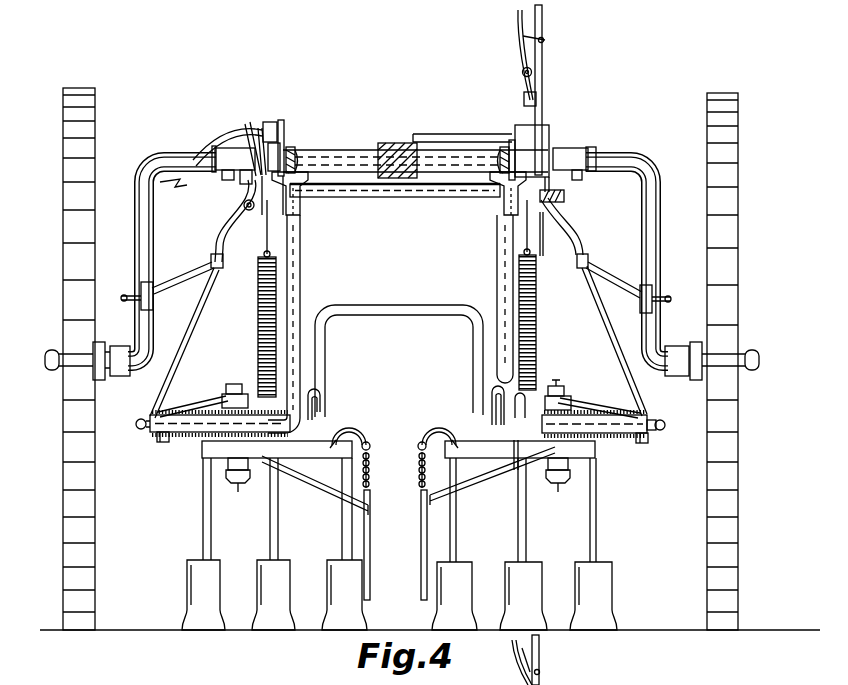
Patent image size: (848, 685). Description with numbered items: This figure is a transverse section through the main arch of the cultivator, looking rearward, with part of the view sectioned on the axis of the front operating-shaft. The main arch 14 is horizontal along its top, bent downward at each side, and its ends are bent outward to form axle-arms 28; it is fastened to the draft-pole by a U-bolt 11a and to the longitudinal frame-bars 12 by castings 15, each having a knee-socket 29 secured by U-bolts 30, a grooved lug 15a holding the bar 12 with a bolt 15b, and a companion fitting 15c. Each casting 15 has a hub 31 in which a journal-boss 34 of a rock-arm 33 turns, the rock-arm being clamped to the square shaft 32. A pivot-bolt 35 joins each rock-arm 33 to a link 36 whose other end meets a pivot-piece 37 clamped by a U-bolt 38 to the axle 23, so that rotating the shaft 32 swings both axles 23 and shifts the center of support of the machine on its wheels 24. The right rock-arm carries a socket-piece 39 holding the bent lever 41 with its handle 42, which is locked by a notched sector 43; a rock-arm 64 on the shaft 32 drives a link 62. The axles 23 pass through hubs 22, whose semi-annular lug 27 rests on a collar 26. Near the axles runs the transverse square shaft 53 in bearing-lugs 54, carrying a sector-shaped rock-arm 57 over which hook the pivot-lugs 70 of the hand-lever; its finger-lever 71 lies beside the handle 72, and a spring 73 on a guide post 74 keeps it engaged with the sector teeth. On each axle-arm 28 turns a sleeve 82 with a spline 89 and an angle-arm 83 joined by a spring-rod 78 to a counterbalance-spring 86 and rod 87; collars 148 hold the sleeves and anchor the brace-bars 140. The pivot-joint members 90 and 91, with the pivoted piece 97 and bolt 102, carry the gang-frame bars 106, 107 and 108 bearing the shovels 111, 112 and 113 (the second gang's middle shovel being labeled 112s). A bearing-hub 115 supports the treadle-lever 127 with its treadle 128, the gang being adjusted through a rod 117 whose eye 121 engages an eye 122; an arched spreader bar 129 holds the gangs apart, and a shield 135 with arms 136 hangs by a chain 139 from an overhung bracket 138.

The U-bolt 11a is at (392, 198).
The longitudinal frame-bar 12 is at (289, 150).
The main arch 14 is at (497, 285).
The casting 15 is at (297, 160).
The grooved lug 15a is at (300, 150).
The bolt 15b is at (300, 160).
The collar flange 15c is at (508, 148).
The hub 22 is at (225, 148).
The axle 23 is at (136, 250).
The wheel axle 24 is at (52, 350).
The collar 26 is at (222, 176).
The semi-annular lug 27 is at (600, 155).
The axle-arm 28 is at (186, 436).
The knee-socket 29 is at (322, 208).
The U-bolt 30 is at (300, 204).
The hub 31 is at (265, 222).
The square shaft 32 is at (560, 200).
The rock-arm 33 is at (228, 228).
The journal-boss 34 is at (536, 230).
The pivot-bolt 35 is at (223, 262).
The link 36 is at (185, 280).
The pivot-piece 37 is at (141, 290).
The U-bolt 38 is at (121, 298).
The socket-piece 39 is at (244, 182).
The bent lever 41 is at (197, 148).
The handle 42 is at (175, 188).
The sector 43 is at (255, 140).
The transverse square shaft 53 is at (440, 134).
The bearing-lug 54 is at (260, 128).
The sector-shaped rock-arm 57 is at (526, 105).
The link 62 is at (286, 122).
The rock-arm 64 is at (270, 122).
The pivot-lug 70 is at (533, 72).
The finger-lever 71 is at (518, 15).
The handle 72 is at (543, 15).
The spring 73 is at (522, 655).
The guide post 74 is at (545, 41).
The spring-rod 78 is at (503, 405).
The sleeve 82 is at (164, 442).
The angle-arm 83 is at (246, 478).
The counterbalance-spring 86 is at (258, 320).
The rod 87 is at (270, 240).
The spline 89 is at (190, 406).
The pivot-joint member 90 is at (226, 394).
The pivot-joint member 91 is at (234, 384).
The pivoted piece 97 is at (238, 492).
The bolt 102 is at (560, 386).
The longitudinal frame-bar 106 is at (210, 462).
The longitudinal frame-bar 107 is at (342, 528).
The longitudinal frame-bar 108 is at (271, 520).
The shovel 111 is at (399, 595).
The shovel 112 is at (390, 150).
The shovel 112s is at (399, 595).
The shovel 113 is at (399, 595).
The bearing-hub 115 is at (514, 470).
The rod 117 is at (590, 406).
The eye 121 is at (138, 420).
The eye 122 is at (140, 430).
The treadle-lever 127 is at (318, 395).
The treadle 128 is at (342, 430).
The arched bar 129 is at (386, 315).
The shield 135 is at (421, 552).
The arm 136 is at (305, 478).
The overhung bracket 138 is at (370, 434).
The chain 139 is at (370, 490).
The brace-bar 140 is at (190, 335).
The collar 148 is at (158, 446).